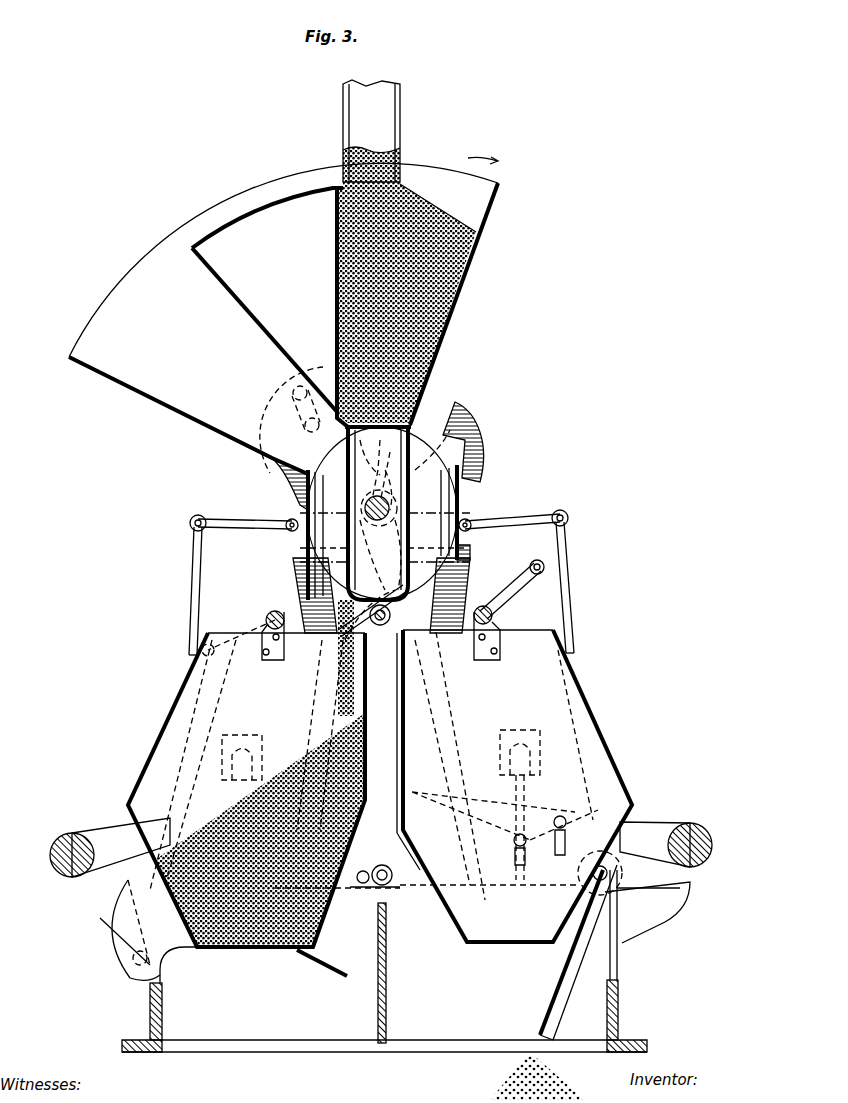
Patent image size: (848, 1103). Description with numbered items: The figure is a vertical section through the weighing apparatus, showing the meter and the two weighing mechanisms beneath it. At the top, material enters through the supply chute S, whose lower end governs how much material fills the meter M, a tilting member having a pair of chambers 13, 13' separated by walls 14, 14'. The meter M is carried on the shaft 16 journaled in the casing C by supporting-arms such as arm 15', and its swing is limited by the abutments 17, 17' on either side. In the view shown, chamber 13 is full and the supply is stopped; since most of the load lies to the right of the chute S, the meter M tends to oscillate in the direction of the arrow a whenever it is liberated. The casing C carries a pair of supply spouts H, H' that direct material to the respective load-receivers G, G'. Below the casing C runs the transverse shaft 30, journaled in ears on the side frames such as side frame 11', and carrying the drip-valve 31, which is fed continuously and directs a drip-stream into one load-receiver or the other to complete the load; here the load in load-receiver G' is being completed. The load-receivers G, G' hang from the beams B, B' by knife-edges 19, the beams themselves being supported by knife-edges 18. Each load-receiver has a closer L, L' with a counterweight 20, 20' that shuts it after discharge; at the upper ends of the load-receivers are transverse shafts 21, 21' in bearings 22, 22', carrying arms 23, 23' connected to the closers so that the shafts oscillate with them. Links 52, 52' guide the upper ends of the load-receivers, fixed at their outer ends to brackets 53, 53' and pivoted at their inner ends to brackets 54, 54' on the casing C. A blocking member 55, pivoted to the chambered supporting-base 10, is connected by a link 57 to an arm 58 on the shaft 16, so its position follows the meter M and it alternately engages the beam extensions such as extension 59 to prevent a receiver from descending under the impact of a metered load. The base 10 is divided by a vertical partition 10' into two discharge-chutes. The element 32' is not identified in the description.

The supply chute S is at (371, 131).
The meter chamber 13 is at (453, 191).
The meter chamber 13' is at (283, 318).
The wall 14 is at (320, 307).
The wall 14' is at (267, 300).
The meter M is at (463, 300).
The arrow a is at (483, 151).
The casing C is at (514, 495).
The arm 58 is at (374, 498).
The shaft 16 is at (392, 467).
The supporting-arm 15' is at (374, 483).
The gate 32' is at (380, 555).
The supply spout H is at (388, 513).
The supply spout H' is at (304, 483).
The abutment 17 is at (484, 442).
The abutment 17' is at (275, 484).
The link 52 is at (516, 514).
The link 52' is at (241, 516).
The bracket 53 is at (579, 587).
The bracket 53' is at (209, 591).
The bracket 54 is at (476, 534).
The bracket 54' is at (284, 515).
The arm 23 is at (512, 589).
The arm 23' is at (238, 629).
The transverse shaft 21 is at (503, 614).
The transverse shaft 21' is at (262, 605).
The bearing 22 is at (504, 636).
The bearing 22' is at (257, 640).
The drip-valve 31 is at (391, 613).
The shaft 30 is at (392, 624).
The link 57 is at (358, 613).
The side frame 11' is at (281, 594).
The load-receiver G is at (516, 786).
The load-receiver G' is at (264, 790).
The extension 59 is at (438, 797).
The knife-edge 18 is at (566, 817).
The knife-edge 19 is at (514, 837).
The blocking member 55 is at (374, 867).
The beam B is at (666, 844).
The beam B' is at (110, 847).
The counterweight 20 is at (634, 915).
The counterweight 20' is at (130, 930).
The closer L is at (578, 952).
The closer L' is at (253, 965).
The supporting-base 10 is at (384, 1040).
The vertical partition 10' is at (405, 973).